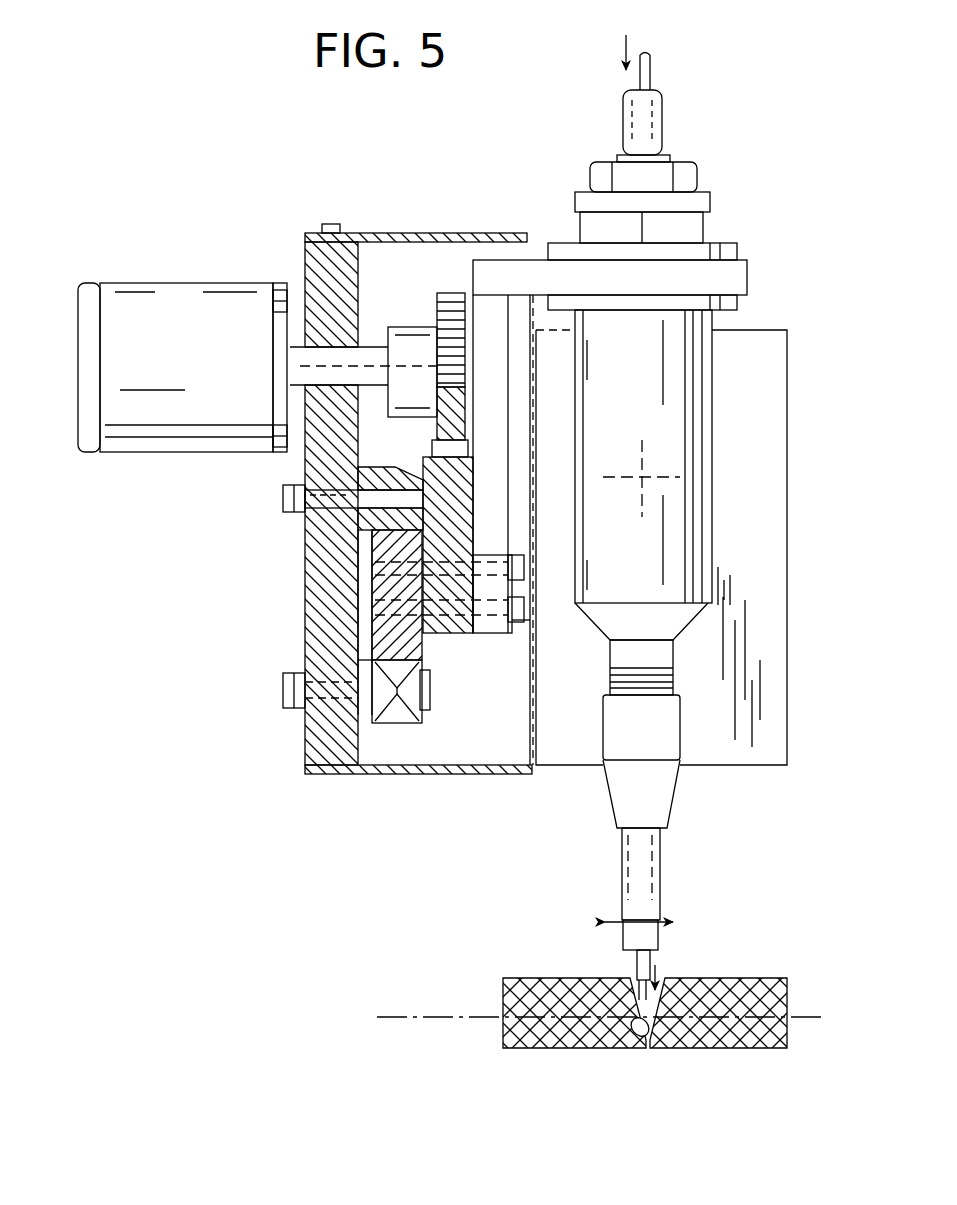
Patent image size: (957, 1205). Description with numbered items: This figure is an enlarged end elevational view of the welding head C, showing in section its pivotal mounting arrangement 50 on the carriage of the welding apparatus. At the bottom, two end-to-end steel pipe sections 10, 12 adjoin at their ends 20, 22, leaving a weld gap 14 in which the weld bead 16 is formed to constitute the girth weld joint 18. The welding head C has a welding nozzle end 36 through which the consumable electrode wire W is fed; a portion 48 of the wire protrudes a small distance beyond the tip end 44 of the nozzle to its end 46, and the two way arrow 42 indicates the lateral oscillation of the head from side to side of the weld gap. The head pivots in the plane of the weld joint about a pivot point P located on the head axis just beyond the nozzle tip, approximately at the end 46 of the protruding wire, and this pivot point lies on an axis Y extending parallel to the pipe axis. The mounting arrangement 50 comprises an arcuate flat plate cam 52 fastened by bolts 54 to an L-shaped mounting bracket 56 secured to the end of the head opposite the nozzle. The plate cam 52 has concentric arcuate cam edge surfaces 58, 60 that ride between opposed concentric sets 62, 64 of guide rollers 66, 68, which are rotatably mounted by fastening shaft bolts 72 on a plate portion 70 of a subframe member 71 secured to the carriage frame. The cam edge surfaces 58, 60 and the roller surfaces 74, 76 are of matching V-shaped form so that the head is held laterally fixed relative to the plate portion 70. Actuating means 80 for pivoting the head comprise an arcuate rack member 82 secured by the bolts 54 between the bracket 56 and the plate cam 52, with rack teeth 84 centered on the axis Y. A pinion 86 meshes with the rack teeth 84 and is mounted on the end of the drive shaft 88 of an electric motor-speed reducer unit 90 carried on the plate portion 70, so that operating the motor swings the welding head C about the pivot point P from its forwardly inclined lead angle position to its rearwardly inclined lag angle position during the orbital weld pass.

The pipe section 10 is at (758, 978).
The pipe section 12 is at (537, 983).
The weld gap 14 is at (668, 980).
The weld bead 16 is at (607, 1048).
The girth weld joint 18 is at (636, 1054).
The adjoining end 20 is at (747, 1048).
The adjoining end 22 is at (533, 1047).
The welding nozzle end 36 is at (633, 862).
The two way arrow 42 is at (640, 918).
The tip end 44 is at (665, 960).
The end of wire electrode portion 46 is at (657, 1017).
The protruding portion of wire electrode 48 is at (630, 977).
The pivotal mounting arrangement 50 is at (292, 565).
The plate cam 52 is at (370, 587).
The bolts 54 is at (525, 575).
The L-shaped mounting bracket 56 is at (487, 267).
The arcuate cam edge surface 58 is at (372, 525).
The arcuate cam edge surface 60 is at (370, 663).
The set of guide rollers 62 is at (375, 455).
The set of guide rollers 64 is at (425, 727).
The guide roller 66 is at (372, 462).
The guide roller 68 is at (425, 662).
The plate portion 70 is at (330, 740).
The subframe member 71 is at (763, 527).
The fastening shaft bolts 72 is at (282, 498).
The roller surface 74 is at (476, 480).
The roller surface 76 is at (403, 720).
The actuating means 80 is at (418, 305).
The arcuate rack member 82 is at (475, 503).
The rack teeth 84 is at (468, 443).
The pinion 86 is at (447, 293).
The drive shaft 88 is at (327, 360).
The electric motor-speed reducer unit 90 is at (175, 297).
The welding head C is at (722, 422).
The consumable electrode wire W is at (655, 72).
The pivot point P is at (652, 1050).
The axis Y is at (420, 1015).